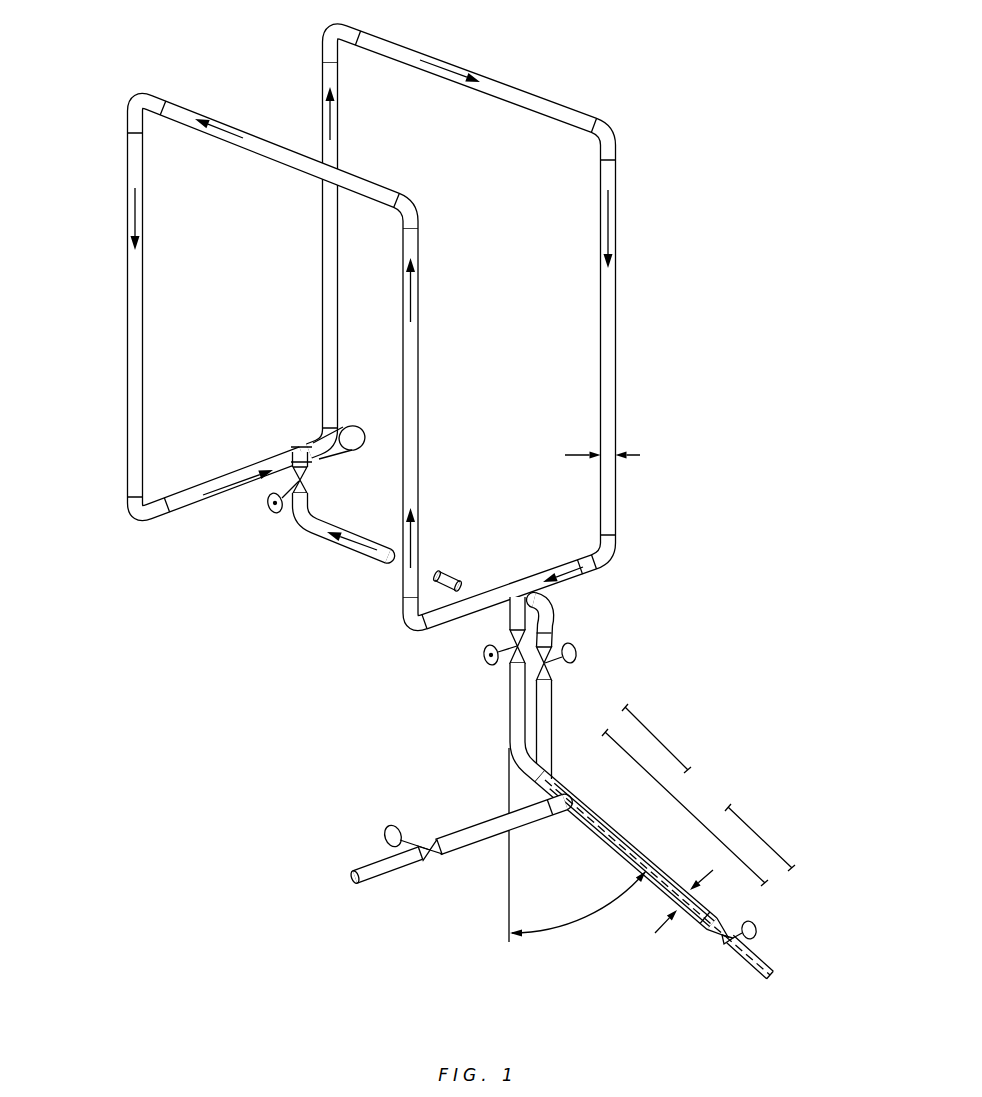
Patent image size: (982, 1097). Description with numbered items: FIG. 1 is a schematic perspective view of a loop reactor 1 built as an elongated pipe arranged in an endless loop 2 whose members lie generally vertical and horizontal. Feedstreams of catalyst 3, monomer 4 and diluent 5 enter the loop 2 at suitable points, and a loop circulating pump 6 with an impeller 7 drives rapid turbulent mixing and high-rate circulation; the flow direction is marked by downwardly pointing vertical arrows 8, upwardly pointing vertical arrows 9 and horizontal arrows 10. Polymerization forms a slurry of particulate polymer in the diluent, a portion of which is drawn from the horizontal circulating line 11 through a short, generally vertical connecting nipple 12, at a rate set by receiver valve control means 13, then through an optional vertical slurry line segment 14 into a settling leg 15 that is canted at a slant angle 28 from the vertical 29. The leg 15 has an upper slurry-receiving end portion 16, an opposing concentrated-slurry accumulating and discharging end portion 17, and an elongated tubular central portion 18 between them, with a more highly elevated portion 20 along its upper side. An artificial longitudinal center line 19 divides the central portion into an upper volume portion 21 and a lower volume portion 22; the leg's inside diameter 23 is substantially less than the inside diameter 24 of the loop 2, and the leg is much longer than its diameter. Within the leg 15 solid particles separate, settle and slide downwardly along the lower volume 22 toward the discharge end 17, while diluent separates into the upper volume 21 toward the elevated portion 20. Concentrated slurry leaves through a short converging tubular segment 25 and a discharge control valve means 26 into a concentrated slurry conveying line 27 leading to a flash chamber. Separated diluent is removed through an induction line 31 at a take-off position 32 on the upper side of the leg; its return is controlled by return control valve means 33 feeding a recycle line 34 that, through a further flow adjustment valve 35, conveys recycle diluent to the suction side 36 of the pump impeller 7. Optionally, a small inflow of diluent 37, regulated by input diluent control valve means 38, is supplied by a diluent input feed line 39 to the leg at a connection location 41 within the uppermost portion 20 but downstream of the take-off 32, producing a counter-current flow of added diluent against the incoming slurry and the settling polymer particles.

The loop reactor 1 is at (497, 393).
The endless loop 2 is at (616, 345).
The catalyst feedstream 3 is at (143, 392).
The monomer feedstream 4 is at (176, 517).
The diluent feedstream 5 is at (201, 441).
The loop circulating pump 6 is at (349, 452).
The impeller 7 is at (315, 463).
The downwardly pointing vertical arrows 8 is at (143, 207).
The upwardly pointing vertical arrows 9 is at (338, 131).
The horizontal arrows 10 is at (448, 58).
The circulating line 11 is at (616, 547).
The connecting nipple 12 is at (509, 626).
The receiver valve control means 13 is at (482, 654).
The slurry line segment 14 is at (509, 696).
The settling leg 15 is at (672, 874).
The upper end portion 16 is at (509, 758).
The second end portion 17 is at (722, 911).
The central portion 18 is at (694, 806).
The artificial longitudinal center line 19 is at (614, 831).
The more highly elevated portion 20 is at (664, 738).
The upper volume portion 21 is at (649, 852).
The lower volume portion 22 is at (607, 859).
The inside diameter of the sloped leg 23 is at (697, 898).
The inside diameter of the loop 24 is at (474, 744).
The converging tubular segment 25 is at (725, 945).
The discharge control valve means 26 is at (758, 931).
The concentrated slurry conveying line 27 is at (774, 970).
The angle α 28 is at (593, 935).
The vertical 29 is at (509, 945).
The induction line 31 is at (552, 702).
The take-off position 32 is at (560, 780).
The return control valve means 33 is at (579, 651).
The recycle line 34 is at (349, 557).
The valve 35 is at (281, 515).
The suction side 36 is at (301, 446).
The inflow of diluent 37 is at (372, 884).
The input diluent control valve means 38 is at (422, 858).
The diluent input feed line 39 is at (482, 845).
The diluent inlet connection location 41 is at (568, 812).